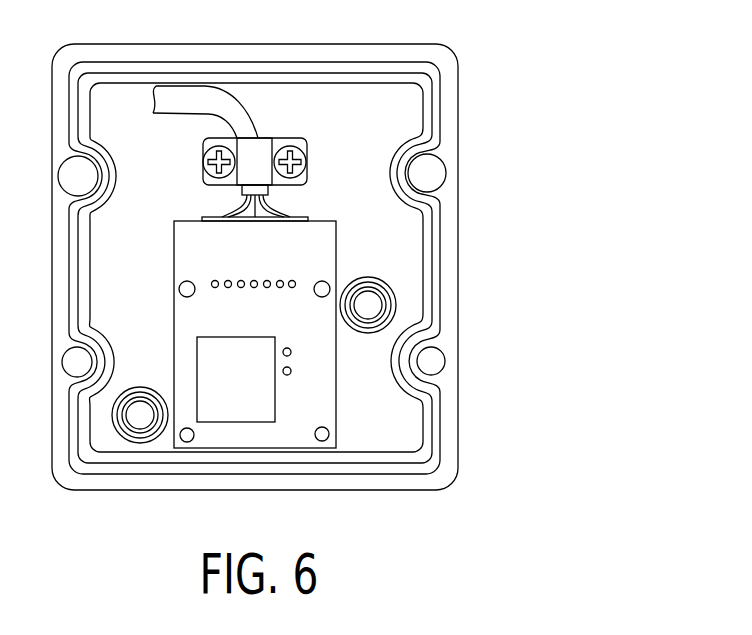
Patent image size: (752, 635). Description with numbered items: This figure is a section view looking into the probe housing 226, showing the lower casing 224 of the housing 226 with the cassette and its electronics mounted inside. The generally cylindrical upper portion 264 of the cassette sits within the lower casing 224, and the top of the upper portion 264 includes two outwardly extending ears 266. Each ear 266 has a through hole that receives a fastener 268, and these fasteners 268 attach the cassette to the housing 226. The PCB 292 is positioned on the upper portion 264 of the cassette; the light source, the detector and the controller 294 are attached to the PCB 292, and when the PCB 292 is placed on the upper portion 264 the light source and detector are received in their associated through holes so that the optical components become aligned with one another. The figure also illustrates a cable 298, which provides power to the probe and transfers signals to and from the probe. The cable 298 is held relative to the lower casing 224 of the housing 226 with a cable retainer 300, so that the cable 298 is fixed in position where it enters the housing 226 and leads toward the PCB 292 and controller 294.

The lower casing 224 is at (403, 105).
The housing 226 is at (469, 140).
The upper portion of the cassette 264 is at (345, 342).
The ears 266 is at (345, 276).
The fastener 268 is at (377, 306).
The PCB 292 is at (190, 247).
The controller 294 is at (244, 424).
The cable 298 is at (257, 153).
The cable retainer 300 is at (258, 137).